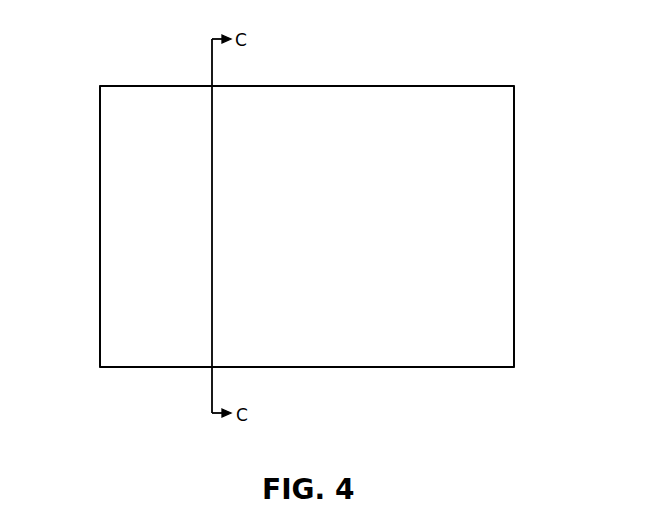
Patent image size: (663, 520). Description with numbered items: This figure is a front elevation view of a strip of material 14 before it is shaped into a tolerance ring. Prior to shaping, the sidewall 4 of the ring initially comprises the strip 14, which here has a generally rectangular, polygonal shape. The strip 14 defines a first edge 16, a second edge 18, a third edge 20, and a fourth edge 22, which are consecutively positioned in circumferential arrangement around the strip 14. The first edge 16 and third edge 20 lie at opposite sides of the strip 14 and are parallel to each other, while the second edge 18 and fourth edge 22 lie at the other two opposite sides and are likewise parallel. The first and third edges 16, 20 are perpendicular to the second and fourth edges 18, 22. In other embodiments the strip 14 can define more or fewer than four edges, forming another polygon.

The sidewall 4 is at (514, 164).
The strip of material 14 is at (316, 254).
The first edge 16 is at (295, 86).
The second edge 18 is at (514, 228).
The third edge 20 is at (297, 369).
The fourth edge 22 is at (99, 226).